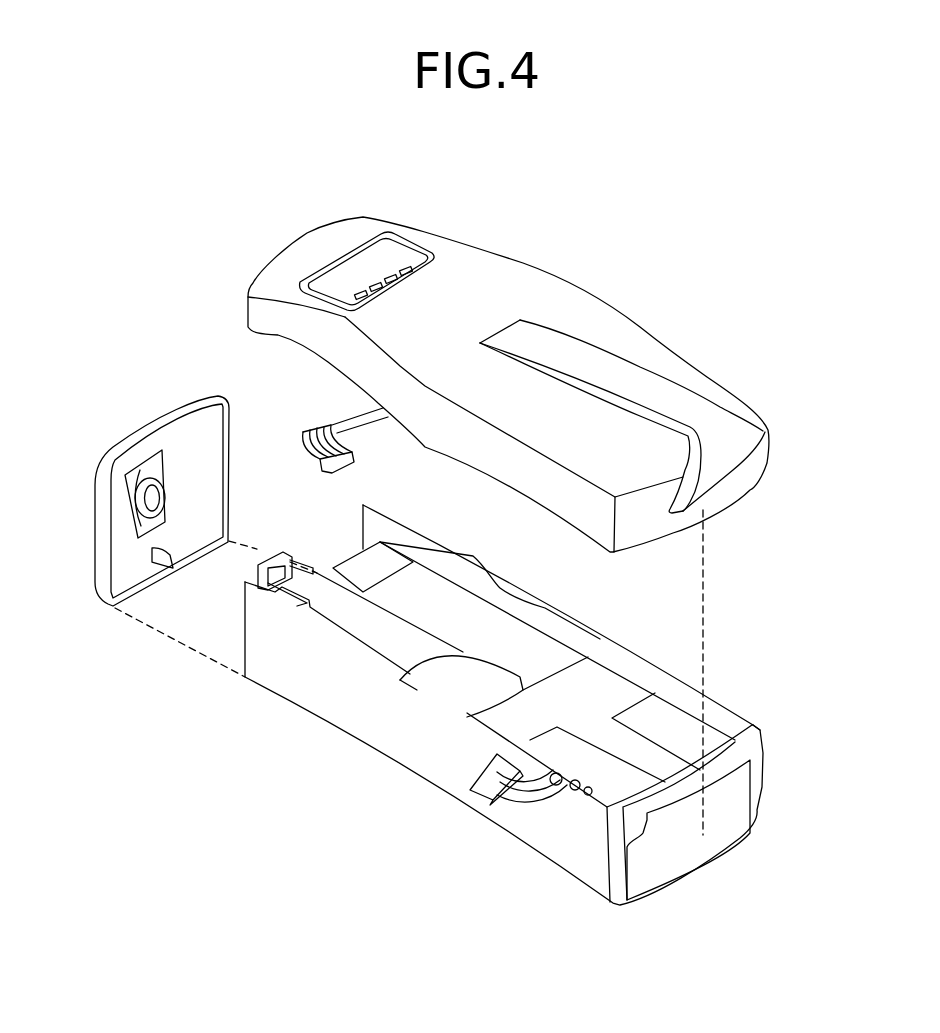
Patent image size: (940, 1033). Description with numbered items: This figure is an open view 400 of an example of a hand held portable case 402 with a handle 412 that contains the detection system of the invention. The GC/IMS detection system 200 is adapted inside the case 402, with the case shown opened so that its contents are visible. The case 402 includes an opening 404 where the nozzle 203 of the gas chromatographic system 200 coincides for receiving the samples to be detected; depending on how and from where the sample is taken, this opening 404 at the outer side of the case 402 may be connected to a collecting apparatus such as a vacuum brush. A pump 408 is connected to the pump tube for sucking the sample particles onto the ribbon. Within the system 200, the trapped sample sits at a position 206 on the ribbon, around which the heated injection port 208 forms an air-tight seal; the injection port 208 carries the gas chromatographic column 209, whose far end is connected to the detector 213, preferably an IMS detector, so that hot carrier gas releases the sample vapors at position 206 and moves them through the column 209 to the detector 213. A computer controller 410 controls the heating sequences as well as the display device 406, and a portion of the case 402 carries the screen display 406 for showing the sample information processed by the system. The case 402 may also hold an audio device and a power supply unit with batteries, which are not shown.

The open view 400 is at (652, 197).
The case 402 is at (478, 540).
The opening 404 is at (137, 503).
The display device 406 is at (400, 245).
The pump 408 is at (700, 740).
The computer controller 410 is at (612, 782).
The handle 412 is at (613, 377).
The GC/IMS detection system 200 is at (436, 595).
The nozzle 203 is at (233, 570).
The position on the ribbon 206 is at (368, 554).
The injection port 208 is at (380, 566).
The gas chromatographic column 209 is at (500, 623).
The detector 213 is at (450, 687).